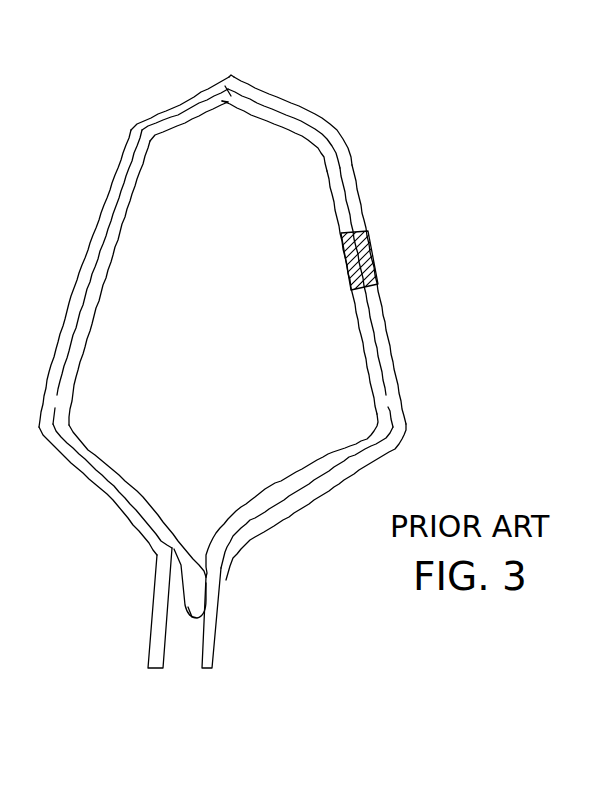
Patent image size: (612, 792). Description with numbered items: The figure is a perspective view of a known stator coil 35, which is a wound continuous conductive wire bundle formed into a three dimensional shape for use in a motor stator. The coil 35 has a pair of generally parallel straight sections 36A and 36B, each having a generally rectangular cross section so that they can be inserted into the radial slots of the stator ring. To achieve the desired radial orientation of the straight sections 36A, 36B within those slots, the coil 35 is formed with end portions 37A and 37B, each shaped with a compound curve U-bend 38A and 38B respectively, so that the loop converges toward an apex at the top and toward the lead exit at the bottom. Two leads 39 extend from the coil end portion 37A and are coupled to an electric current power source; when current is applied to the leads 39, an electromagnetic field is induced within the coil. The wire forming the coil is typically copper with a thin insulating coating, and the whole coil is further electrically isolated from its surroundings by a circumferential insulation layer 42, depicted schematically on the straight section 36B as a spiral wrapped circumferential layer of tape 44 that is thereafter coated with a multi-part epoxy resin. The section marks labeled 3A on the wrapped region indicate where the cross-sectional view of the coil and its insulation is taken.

The stator coil 35 is at (264, 379).
The straight section 36A is at (80, 270).
The straight section 36B is at (383, 342).
The end portion 37A is at (108, 494).
The end portion 37B is at (173, 108).
The compound curve U-bend 38A is at (192, 607).
The compound curve U-bend 38B is at (231, 76).
The leads 39 is at (150, 672).
The insulation layer 42 is at (332, 132).
The spiral wrapped circumferential layer of tape 44 is at (378, 271).
The section line 3A- 3A is at (343, 262).